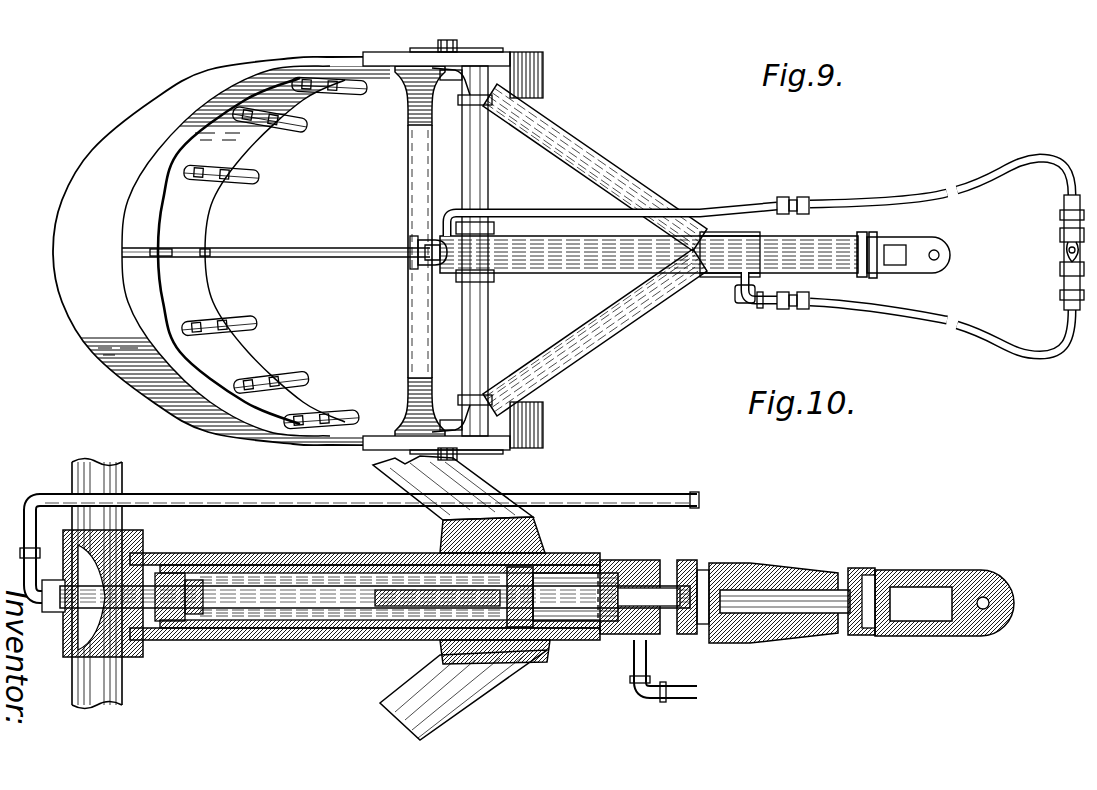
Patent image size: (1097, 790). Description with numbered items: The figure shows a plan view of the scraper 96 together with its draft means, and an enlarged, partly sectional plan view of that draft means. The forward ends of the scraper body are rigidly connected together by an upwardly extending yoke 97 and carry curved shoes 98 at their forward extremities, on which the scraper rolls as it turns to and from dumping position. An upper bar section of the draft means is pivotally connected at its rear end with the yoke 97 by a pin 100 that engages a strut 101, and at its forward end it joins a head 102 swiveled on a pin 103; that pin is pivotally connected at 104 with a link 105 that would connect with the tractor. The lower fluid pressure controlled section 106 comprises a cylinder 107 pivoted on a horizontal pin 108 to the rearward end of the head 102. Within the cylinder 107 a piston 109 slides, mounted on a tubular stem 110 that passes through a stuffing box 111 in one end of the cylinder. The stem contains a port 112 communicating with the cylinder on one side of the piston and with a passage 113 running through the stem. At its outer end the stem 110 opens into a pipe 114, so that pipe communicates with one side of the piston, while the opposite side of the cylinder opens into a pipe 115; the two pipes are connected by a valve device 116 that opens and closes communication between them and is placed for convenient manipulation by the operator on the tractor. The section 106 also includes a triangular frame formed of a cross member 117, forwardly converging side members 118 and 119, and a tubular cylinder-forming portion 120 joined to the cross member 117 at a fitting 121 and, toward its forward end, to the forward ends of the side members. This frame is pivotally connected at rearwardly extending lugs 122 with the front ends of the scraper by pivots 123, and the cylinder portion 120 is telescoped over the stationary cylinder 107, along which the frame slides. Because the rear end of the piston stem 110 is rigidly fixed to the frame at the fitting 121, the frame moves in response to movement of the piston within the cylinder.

In FIG. 9, the scraper 96 is at (218, 66).
In FIG. 9, the yoke 97 is at (412, 203).
In FIG. 9, the curved shoes 98 is at (545, 68).
In FIG. 9, the pin 100 is at (412, 268).
In FIG. 9, the strut 101 is at (306, 257).
In FIG. 10, the head 102 is at (779, 607).
In FIG. 10, the pin 103 is at (790, 612).
In FIG. 9, the pivotal connection 104 is at (873, 277).
In FIG. 10, the pivotal connection 104 is at (872, 570).
In FIG. 9, the link 105 is at (950, 262).
In FIG. 10, the link 105 is at (936, 637).
In FIG. 10, the fluid pressure controlled section 106 is at (279, 658).
In FIG. 10, the cylinder 107 is at (640, 560).
In FIG. 10, the horizontal pin 108 is at (692, 560).
In FIG. 10, the piston 109 is at (540, 650).
In FIG. 10, the tubular stem 110 is at (352, 610).
In FIG. 10, the stuffing box 111 is at (176, 573).
In FIG. 10, the port 112 is at (490, 590).
In FIG. 10, the passage 113 is at (440, 606).
In FIG. 9, the pipe 114 is at (724, 207).
In FIG. 10, the pipe 114 is at (181, 483).
In FIG. 9, the pipe 115 is at (755, 306).
In FIG. 10, the pipe 115 is at (645, 695).
In FIG. 9, the valve device 116 is at (1062, 254).
In FIG. 9, the cross member 117 is at (489, 173).
In FIG. 9, the side member 118 is at (622, 318).
In FIG. 10, the side member 118 is at (402, 716).
In FIG. 9, the side member 119 is at (612, 172).
In FIG. 10, the side member 119 is at (372, 478).
In FIG. 10, the tubular cylinder-forming portion 120 is at (298, 552).
In FIG. 10, the fitting 121 is at (128, 645).
In FIG. 9, the rearwardly extending lugs 122 is at (458, 72).
In FIG. 9, the pivots 123 is at (446, 40).